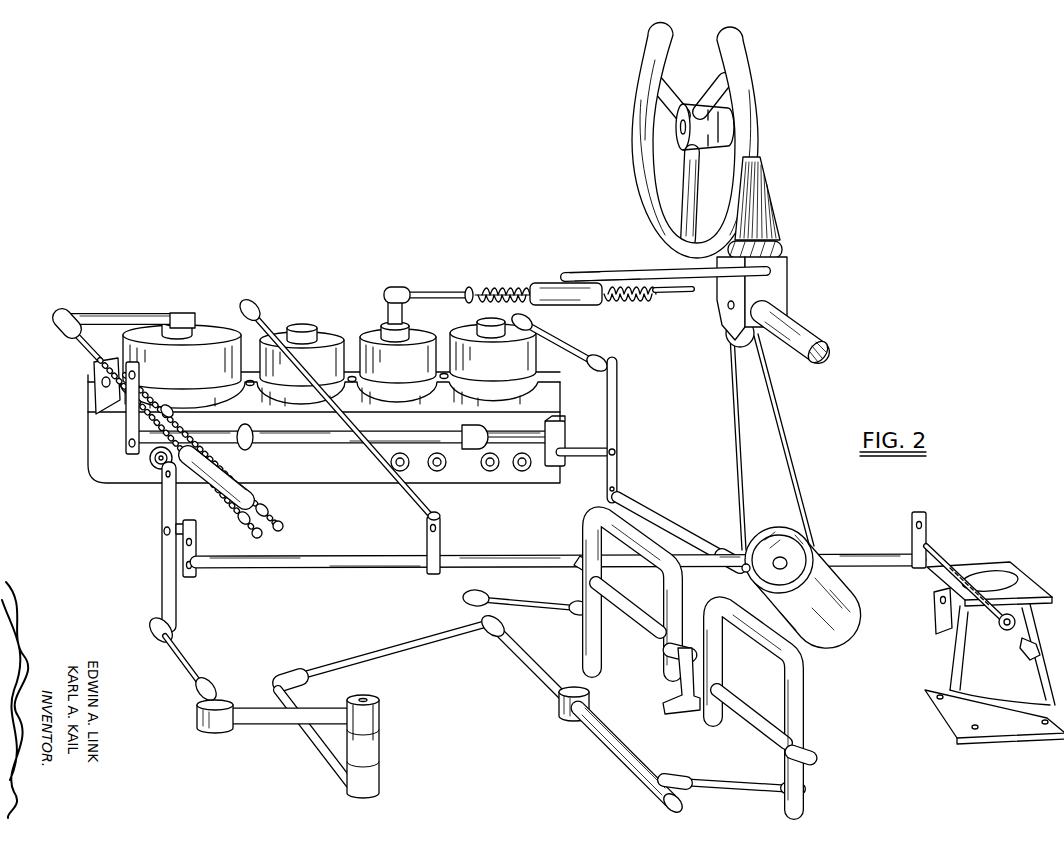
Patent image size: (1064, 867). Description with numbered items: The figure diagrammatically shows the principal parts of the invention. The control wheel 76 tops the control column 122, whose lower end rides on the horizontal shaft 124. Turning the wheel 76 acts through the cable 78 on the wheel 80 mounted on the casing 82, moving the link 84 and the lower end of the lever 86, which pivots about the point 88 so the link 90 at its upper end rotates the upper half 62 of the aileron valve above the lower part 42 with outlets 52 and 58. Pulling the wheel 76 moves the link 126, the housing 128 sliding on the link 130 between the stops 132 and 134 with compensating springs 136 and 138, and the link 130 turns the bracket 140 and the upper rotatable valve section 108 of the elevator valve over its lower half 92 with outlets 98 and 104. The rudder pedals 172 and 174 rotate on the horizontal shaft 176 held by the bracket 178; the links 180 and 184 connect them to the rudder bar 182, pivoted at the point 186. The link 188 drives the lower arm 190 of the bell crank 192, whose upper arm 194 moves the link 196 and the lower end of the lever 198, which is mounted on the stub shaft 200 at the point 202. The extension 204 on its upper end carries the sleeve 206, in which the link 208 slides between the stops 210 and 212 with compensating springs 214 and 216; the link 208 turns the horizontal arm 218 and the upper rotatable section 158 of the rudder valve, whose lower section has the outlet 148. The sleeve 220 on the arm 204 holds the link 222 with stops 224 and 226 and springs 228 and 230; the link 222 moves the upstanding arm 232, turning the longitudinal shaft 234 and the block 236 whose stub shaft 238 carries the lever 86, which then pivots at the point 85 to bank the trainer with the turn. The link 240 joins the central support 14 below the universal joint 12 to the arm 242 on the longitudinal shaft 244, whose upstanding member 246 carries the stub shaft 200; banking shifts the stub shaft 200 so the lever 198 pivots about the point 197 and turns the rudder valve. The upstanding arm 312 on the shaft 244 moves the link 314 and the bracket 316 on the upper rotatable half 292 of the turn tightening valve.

The universal joint 12 is at (928, 595).
The central support 14 is at (972, 652).
The lower part of the aileron valve 42 is at (333, 427).
The exterior outlet 52 is at (492, 471).
The exterior outlet 58 is at (526, 471).
The upper half of the aileron valve 62 is at (507, 356).
The control wheel 76 is at (748, 130).
The cable 78 is at (792, 503).
The wheel 80 is at (746, 575).
The casing 82 is at (838, 620).
The link 84 is at (660, 512).
The point 85 is at (607, 489).
The lever 86 is at (618, 407).
The point 88 is at (618, 449).
The link 90 is at (546, 342).
The lower half of the elevator valve 92 is at (396, 400).
The exterior outlet 98 is at (405, 470).
The exterior outlet 104 is at (442, 470).
The upper rotatable valve section 108 is at (412, 336).
The control column 122 is at (782, 283).
The horizontal shaft 124 is at (797, 340).
The link 126 is at (614, 272).
The housing 128 is at (538, 283).
The link 130 is at (427, 290).
The stop 132 is at (467, 288).
The stop 134 is at (660, 294).
The compensating spring 136 is at (494, 287).
The compensating spring 138 is at (650, 298).
The bracket 140 is at (386, 305).
The exterior outlet 148 is at (160, 468).
The upper rotatable section of the rudder valve 158 is at (206, 325).
The rudder pedal 172 is at (805, 721).
The rudder pedal 174 is at (668, 582).
The horizontal shaft 176 is at (572, 569).
The bracket 178 is at (678, 712).
The link 180 is at (746, 784).
The rudder bar 182 is at (602, 738).
The link 184 is at (556, 610).
The point 186 is at (557, 692).
The link 188 is at (373, 655).
The lower arm 190 is at (333, 746).
The bell crank 192 is at (366, 748).
The upper arm 194 is at (286, 720).
The link 196 is at (193, 661).
The point 197 is at (147, 627).
The lever 198 is at (163, 576).
The stub shaft 200 is at (180, 533).
The point 202 is at (163, 530).
The extension 204 is at (180, 480).
The sleeve 206 is at (145, 459).
The link 208 is at (84, 347).
The stop 210 is at (94, 365).
The stop 212 is at (252, 537).
The compensating spring 214 is at (128, 398).
The compensating spring 216 is at (240, 528).
The horizontal arm 218 is at (97, 313).
The sleeve 220 is at (246, 480).
The link 222 is at (153, 409).
The stop 224 is at (174, 409).
The stop 226 is at (284, 524).
The compensating spring 228 is at (247, 448).
The compensating spring 230 is at (272, 504).
The upstanding arm 232 is at (126, 431).
The longitudinal shaft 234 is at (344, 442).
The block 236 is at (545, 430).
The stub shaft 238 is at (574, 447).
The link 240 is at (944, 556).
The arm 242 is at (910, 533).
The longitudinal shaft 244 is at (514, 557).
The upstanding member 246 is at (192, 578).
The upper rotatable half of the turn tightening valve 292 is at (303, 327).
The upstanding arm 312 is at (427, 537).
The link 314 is at (442, 513).
The bracket 316 is at (258, 303).